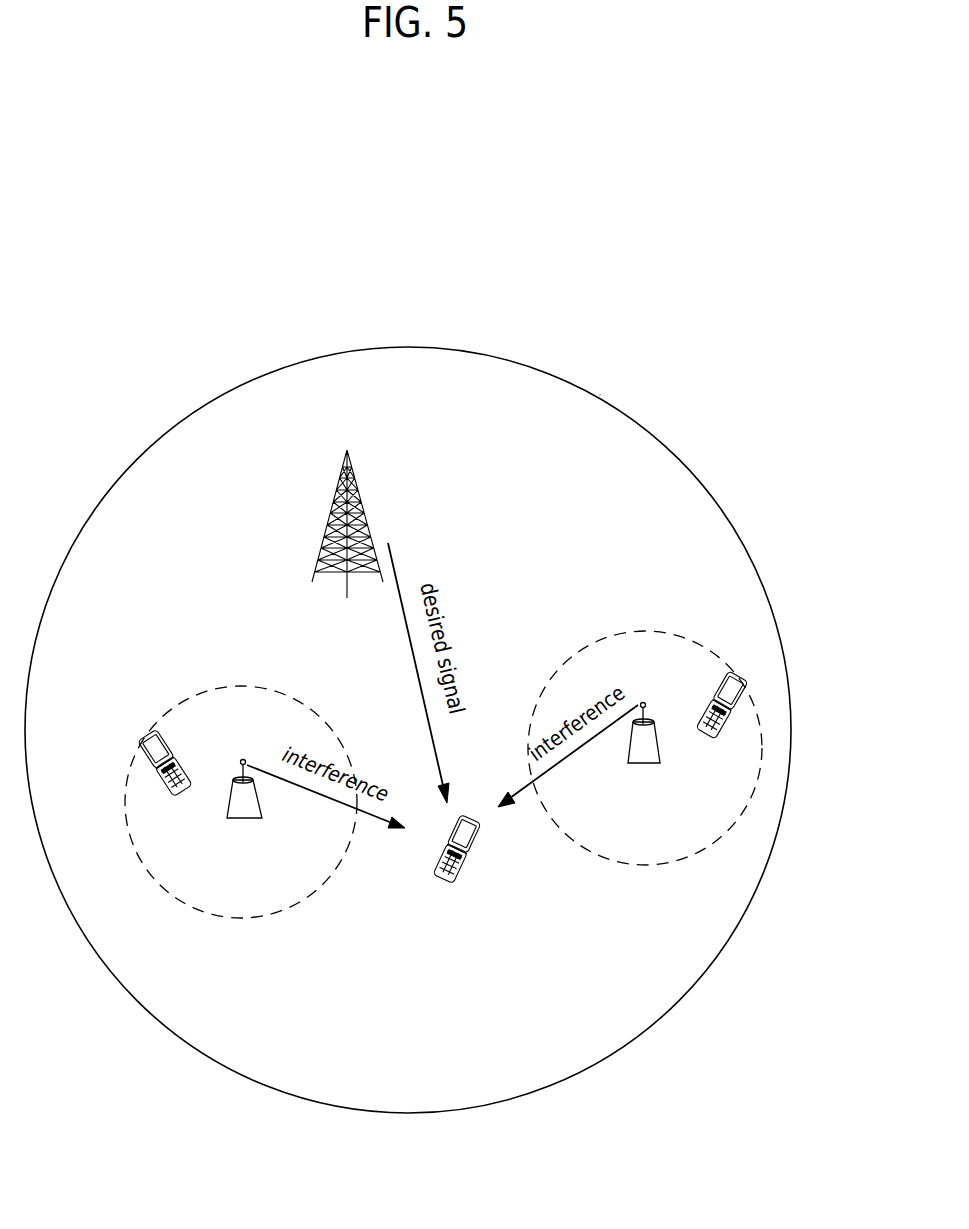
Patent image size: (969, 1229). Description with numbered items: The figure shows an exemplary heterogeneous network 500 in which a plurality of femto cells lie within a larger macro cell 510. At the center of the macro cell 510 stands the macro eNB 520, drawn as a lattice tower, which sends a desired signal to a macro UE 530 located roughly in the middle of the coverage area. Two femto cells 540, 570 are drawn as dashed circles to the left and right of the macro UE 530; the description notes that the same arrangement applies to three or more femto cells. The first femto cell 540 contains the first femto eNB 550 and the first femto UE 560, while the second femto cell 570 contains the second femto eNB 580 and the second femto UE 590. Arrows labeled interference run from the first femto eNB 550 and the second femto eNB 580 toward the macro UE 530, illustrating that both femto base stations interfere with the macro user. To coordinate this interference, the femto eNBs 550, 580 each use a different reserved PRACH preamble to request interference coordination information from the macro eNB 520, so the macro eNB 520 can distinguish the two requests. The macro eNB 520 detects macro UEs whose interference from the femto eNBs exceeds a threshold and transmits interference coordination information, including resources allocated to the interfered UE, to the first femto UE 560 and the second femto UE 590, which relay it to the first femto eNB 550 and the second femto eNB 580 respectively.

The heterogeneous network 500 is at (537, 331).
The macro cell 510 is at (590, 413).
The macro eNB 520 is at (345, 478).
The macro UE 530 is at (475, 865).
The femto cell 540 is at (308, 718).
The femto eNB 1 550 is at (243, 757).
The femto UE 1 560 is at (160, 727).
The femto cell 570 is at (578, 664).
The femto eNB 2 580 is at (643, 700).
The femto UE 2 590 is at (725, 672).